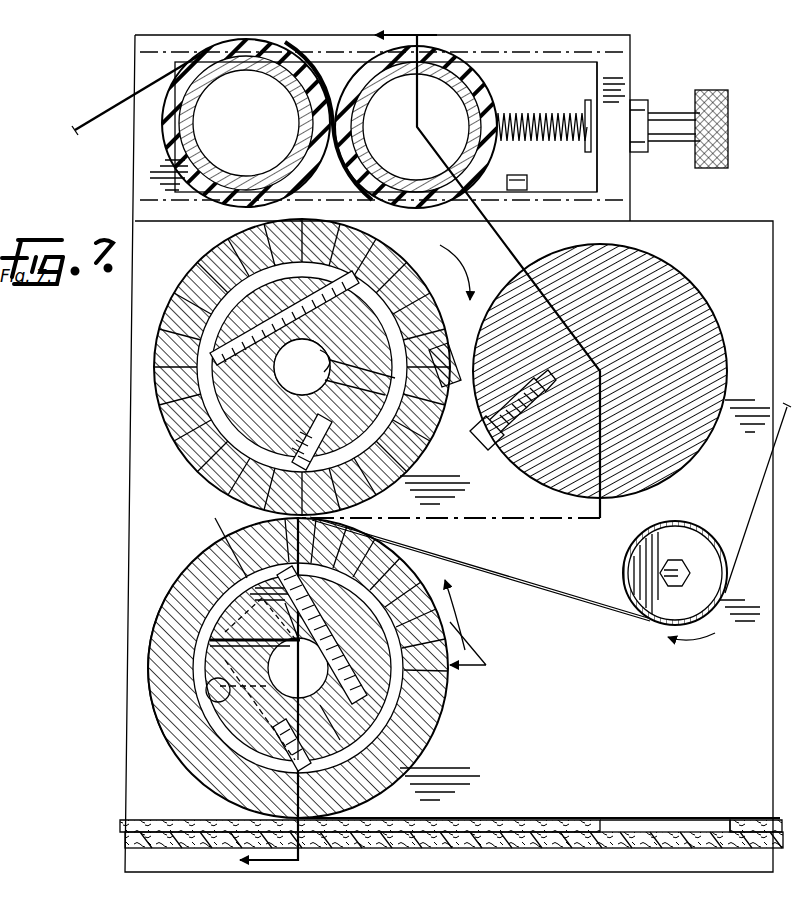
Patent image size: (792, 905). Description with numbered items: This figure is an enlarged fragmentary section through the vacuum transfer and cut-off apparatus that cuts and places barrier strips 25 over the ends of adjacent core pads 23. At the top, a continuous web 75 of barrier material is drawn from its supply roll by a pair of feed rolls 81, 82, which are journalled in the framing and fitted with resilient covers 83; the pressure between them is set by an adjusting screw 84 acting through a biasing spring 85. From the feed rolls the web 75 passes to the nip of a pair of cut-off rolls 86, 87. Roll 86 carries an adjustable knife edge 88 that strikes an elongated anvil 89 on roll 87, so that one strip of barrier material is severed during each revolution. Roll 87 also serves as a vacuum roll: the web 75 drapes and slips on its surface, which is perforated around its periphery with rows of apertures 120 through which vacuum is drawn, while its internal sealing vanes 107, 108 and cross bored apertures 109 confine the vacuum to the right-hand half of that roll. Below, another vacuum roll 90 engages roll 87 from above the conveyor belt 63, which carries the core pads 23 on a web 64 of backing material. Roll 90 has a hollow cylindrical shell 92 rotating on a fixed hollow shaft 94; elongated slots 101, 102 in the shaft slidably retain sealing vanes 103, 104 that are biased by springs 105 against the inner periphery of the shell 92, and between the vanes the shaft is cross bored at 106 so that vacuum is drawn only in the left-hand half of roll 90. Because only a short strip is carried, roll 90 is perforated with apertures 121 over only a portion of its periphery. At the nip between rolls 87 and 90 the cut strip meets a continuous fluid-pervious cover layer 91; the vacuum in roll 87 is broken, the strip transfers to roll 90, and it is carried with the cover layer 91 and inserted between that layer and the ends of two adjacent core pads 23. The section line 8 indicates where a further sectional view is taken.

The section line 8- 8 is at (420, 452).
The core pad 23 is at (178, 826).
The barrier strip 25 is at (698, 830).
The conveyor belt 63 is at (590, 847).
The web of backing material 64 is at (448, 850).
The web of barrier material 75 is at (100, 115).
The feed roll 81 is at (165, 176).
The feed roll 82 is at (496, 147).
The resilient cover 83 is at (166, 128).
The adjusting screw 84 is at (648, 118).
The biasing spring 85 is at (580, 132).
The cut-off roll 86 is at (700, 292).
The cut-off roll 87 is at (156, 322).
The adjustable knife edge 88 is at (482, 340).
The elongated anvil 89 is at (478, 405).
The vacuum roll 90 is at (440, 742).
The cover layer 91 is at (618, 602).
The cylindrical shell 92 is at (440, 720).
The shaft 94 is at (207, 590).
The elongated slot 101 is at (310, 618).
The elongated slot 102 is at (302, 712).
The sealing vane 103 is at (300, 602).
The sealing vane 104 is at (300, 740).
The spring 105 is at (338, 630).
The cross bore 106 is at (216, 696).
The sealing vane 107 is at (322, 308).
The sealing vane 108 is at (310, 424).
The cross bored aperture 109 is at (322, 360).
The apertures 120 is at (205, 262).
The apertures 121 is at (402, 597).